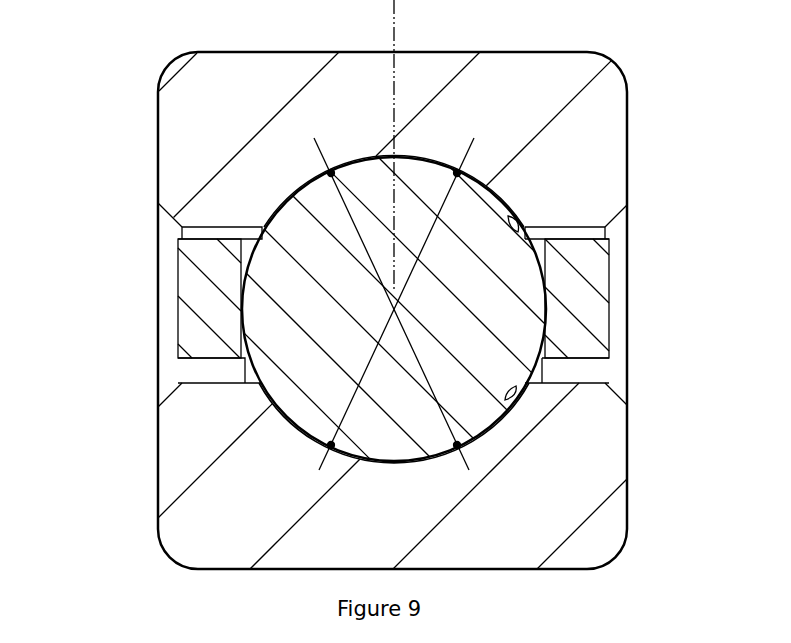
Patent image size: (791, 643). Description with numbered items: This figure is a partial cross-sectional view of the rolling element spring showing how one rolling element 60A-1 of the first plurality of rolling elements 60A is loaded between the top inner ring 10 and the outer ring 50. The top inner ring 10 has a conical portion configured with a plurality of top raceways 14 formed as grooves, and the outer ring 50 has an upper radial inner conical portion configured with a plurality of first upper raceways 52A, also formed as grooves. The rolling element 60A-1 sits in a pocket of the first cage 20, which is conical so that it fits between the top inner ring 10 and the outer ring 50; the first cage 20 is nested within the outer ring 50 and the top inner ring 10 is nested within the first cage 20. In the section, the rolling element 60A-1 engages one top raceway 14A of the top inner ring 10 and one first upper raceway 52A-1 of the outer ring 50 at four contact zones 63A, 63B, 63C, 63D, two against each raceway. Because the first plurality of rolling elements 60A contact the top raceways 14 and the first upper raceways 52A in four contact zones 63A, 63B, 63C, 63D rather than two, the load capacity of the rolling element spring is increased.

The top inner ring 10 is at (212, 75).
The outer ring 50 is at (180, 527).
The first cage 20 is at (195, 283).
The first plurality of rolling elements 60A is at (283, 307).
The rolling element 60A-1 is at (297, 220).
The top raceways 14 is at (495, 194).
The top raceway 14A is at (522, 226).
The first upper raceways 52A is at (508, 423).
The first upper raceway 52A-1 is at (512, 391).
The contact zone 63A is at (331, 173).
The contact zone 63B is at (457, 173).
The contact zone 63C is at (457, 445).
The contact zone 63D is at (331, 445).